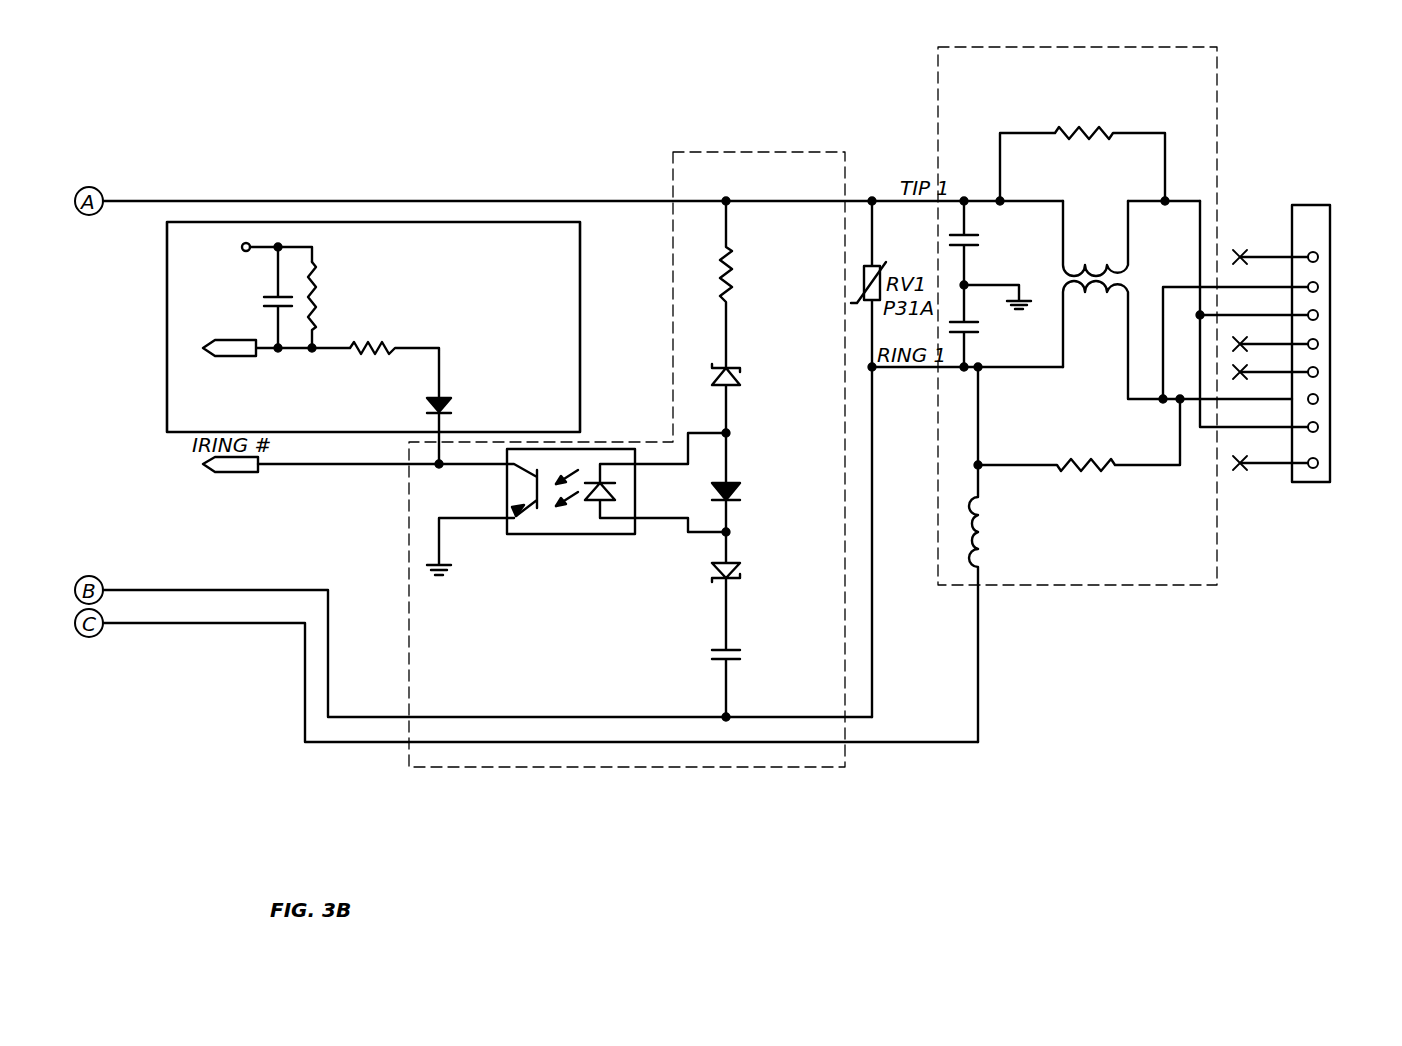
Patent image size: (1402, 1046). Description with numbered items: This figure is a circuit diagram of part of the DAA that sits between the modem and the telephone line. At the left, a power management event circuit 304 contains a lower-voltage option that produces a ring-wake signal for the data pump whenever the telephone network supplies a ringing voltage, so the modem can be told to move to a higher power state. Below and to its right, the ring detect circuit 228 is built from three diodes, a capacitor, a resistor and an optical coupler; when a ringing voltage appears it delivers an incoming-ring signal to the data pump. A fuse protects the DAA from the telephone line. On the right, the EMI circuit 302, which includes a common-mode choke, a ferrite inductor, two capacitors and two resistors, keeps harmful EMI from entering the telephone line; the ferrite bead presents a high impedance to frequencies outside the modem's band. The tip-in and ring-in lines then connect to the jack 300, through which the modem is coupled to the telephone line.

The power management event circuit 304 is at (523, 222).
The ring detect circuit 228 is at (795, 767).
The EMI circuit 302 is at (1147, 585).
The jack 300 is at (1322, 205).